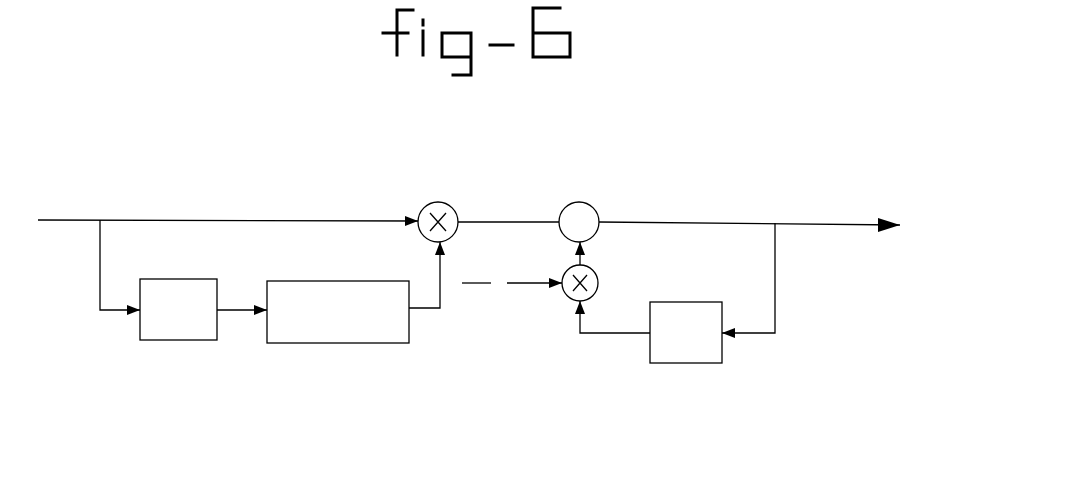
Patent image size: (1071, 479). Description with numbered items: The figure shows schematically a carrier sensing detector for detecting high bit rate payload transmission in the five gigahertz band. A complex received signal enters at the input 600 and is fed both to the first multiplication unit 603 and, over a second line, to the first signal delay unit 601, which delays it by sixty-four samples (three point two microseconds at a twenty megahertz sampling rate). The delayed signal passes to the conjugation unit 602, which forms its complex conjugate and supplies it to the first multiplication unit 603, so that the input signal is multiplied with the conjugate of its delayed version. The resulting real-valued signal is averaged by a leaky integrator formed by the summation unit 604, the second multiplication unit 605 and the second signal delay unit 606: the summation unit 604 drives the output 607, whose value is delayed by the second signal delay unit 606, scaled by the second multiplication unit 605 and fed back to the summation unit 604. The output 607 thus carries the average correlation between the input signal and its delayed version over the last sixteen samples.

The input 600 is at (62, 177).
The first signal delay unit 601 is at (162, 343).
The conjugation unit 602 is at (330, 345).
The first multiplication unit 603 is at (426, 205).
The summation unit 604 is at (590, 203).
The second multiplication unit 605 is at (562, 291).
The second signal delay unit 606 is at (695, 365).
The output 607 is at (920, 181).